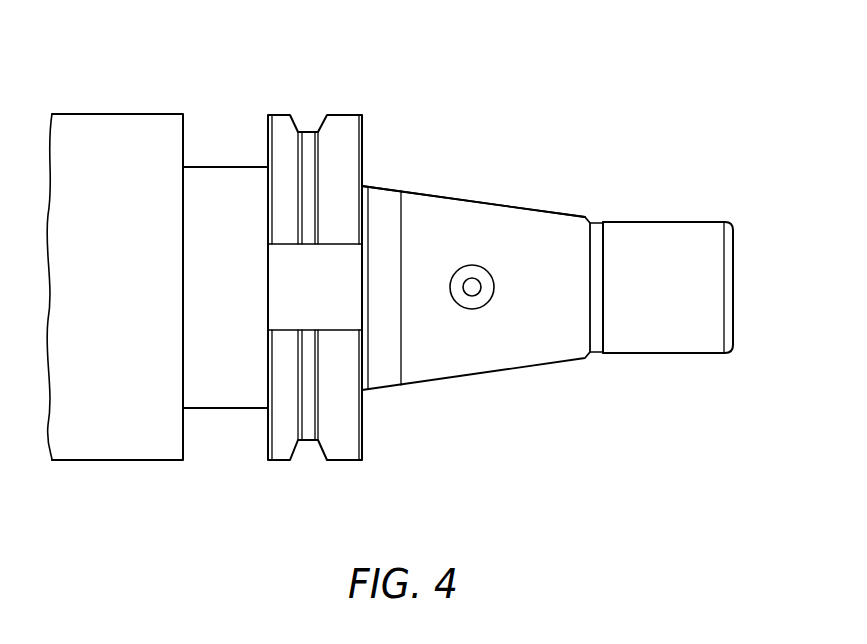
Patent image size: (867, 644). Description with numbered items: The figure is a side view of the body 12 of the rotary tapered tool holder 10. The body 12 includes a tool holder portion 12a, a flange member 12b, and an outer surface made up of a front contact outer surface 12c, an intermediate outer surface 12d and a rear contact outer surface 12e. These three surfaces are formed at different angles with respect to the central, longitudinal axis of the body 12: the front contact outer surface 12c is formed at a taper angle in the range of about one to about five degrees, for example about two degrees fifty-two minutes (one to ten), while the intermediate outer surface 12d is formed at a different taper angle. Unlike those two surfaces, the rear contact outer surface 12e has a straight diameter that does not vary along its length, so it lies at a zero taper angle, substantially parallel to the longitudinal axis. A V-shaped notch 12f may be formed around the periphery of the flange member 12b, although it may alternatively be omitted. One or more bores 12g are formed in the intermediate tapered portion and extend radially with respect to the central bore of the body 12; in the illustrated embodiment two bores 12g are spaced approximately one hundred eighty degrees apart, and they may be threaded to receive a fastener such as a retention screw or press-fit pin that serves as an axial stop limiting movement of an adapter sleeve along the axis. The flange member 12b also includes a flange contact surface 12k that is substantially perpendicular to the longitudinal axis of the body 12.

The tool holder 10 is at (780, 113).
The body 12 is at (461, 236).
The tool holder portion 12a is at (226, 166).
The flange member 12b is at (303, 236).
The front contact outer surface 12c is at (380, 187).
The intermediate outer surface 12d is at (480, 198).
The rear contact outer surface 12e is at (672, 222).
The V-shaped notch 12f is at (308, 132).
The bore 12g is at (461, 299).
The flange contact surface 12k is at (365, 138).